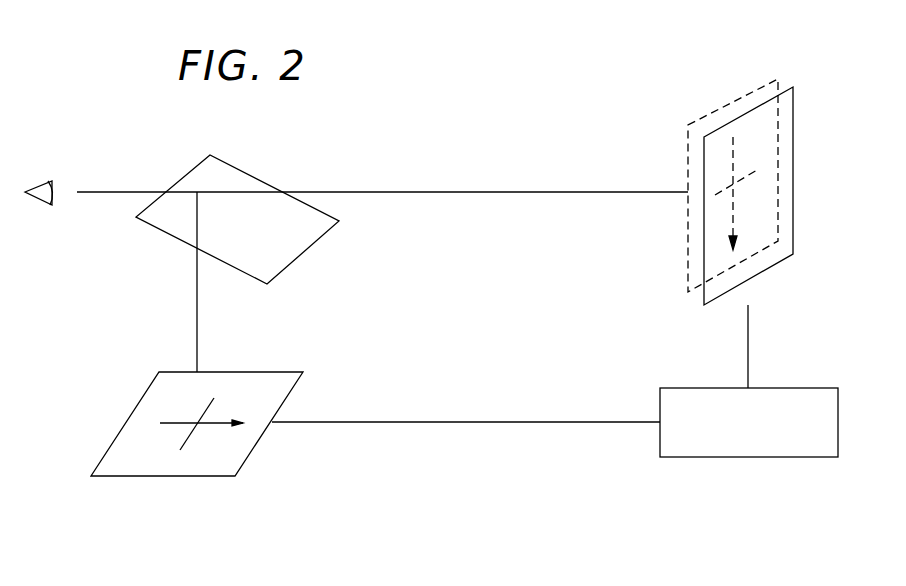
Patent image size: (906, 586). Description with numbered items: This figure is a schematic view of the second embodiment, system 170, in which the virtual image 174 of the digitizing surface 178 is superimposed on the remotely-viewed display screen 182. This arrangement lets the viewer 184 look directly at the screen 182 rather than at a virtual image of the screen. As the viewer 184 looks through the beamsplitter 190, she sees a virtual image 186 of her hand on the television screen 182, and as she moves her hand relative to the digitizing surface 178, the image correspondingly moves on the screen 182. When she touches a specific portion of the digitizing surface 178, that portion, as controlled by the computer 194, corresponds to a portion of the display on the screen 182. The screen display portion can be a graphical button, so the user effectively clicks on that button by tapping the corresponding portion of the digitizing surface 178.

The system 170 is at (445, 129).
The virtual image 174 is at (737, 98).
The digitizing surface 178 is at (296, 389).
The display screen 182 is at (777, 263).
The viewer 184 is at (42, 202).
The virtual image of hand 186 is at (733, 155).
The beamsplitter 190 is at (306, 253).
The computer 194 is at (706, 458).